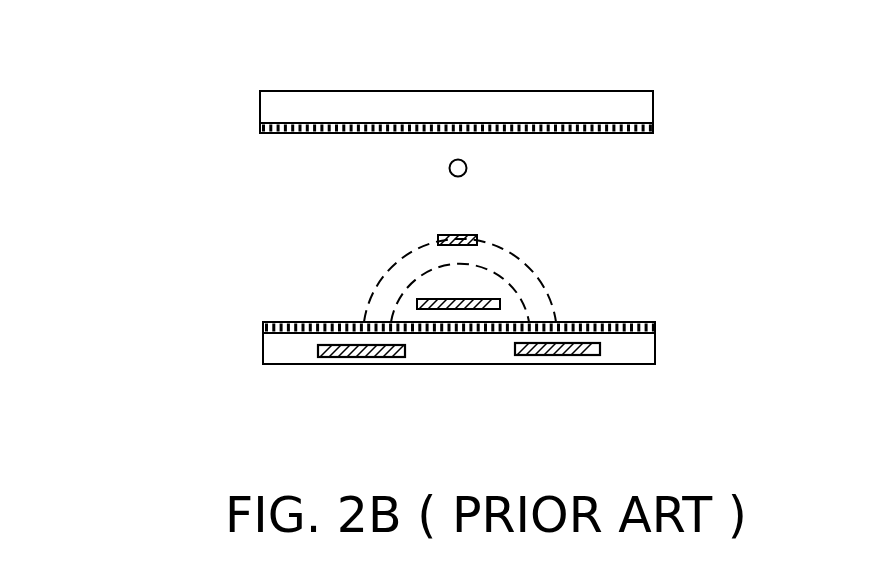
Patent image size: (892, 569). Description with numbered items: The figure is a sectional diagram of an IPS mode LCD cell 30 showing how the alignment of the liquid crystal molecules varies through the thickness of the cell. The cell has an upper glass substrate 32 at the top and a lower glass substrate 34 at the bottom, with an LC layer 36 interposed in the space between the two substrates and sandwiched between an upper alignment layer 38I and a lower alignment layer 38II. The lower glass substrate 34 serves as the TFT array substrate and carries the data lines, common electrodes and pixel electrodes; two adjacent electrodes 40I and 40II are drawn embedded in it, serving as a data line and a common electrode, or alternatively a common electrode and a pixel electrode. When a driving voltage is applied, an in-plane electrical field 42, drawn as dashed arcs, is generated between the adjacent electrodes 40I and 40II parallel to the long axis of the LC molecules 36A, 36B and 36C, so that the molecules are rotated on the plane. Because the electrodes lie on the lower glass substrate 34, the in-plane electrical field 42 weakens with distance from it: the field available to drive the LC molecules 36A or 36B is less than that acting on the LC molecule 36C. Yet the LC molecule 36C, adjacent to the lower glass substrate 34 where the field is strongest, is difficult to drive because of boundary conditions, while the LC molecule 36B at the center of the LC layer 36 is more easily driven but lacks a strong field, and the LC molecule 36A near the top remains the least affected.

The IPS mode LCD cell 30 is at (200, 46).
The upper glass substrate 32 is at (640, 101).
The upper alignment layer 38I is at (645, 128).
The LC layer 36 is at (226, 140).
The LC molecule 36A is at (467, 168).
The LC molecule 36B is at (463, 235).
The LC molecule 36C is at (458, 309).
The in-plane electrical field 42 is at (380, 272).
The lower alignment layer 38II is at (645, 327).
The lower glass substrate 34 is at (640, 353).
The electrode 40I is at (359, 340).
The electrode 40II is at (560, 338).